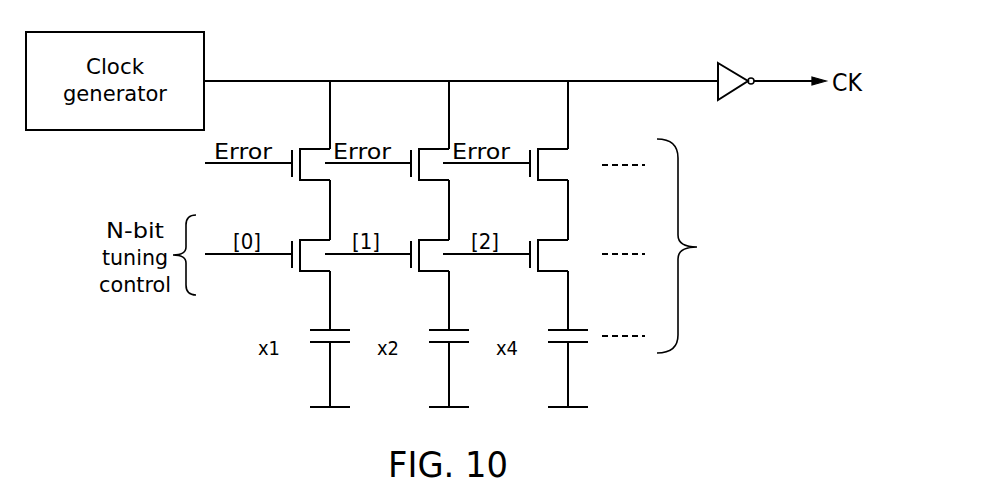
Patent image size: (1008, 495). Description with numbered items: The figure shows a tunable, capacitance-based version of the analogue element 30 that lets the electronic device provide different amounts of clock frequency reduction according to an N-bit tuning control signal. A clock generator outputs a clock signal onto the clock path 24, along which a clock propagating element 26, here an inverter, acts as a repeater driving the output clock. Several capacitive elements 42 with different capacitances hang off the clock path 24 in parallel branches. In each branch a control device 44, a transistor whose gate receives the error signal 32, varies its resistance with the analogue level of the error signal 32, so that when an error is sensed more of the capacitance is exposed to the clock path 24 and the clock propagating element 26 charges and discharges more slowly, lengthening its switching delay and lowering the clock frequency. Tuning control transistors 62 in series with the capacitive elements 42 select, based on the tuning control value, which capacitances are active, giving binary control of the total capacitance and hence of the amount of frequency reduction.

The clock path 24 is at (487, 80).
The clock propagating element 26 is at (740, 64).
The analogue element 30 is at (671, 246).
The first signal 32 is at (266, 167).
The capacitive element 42 is at (319, 345).
The control device 44 is at (317, 148).
The tuning control transistor 62 is at (319, 273).